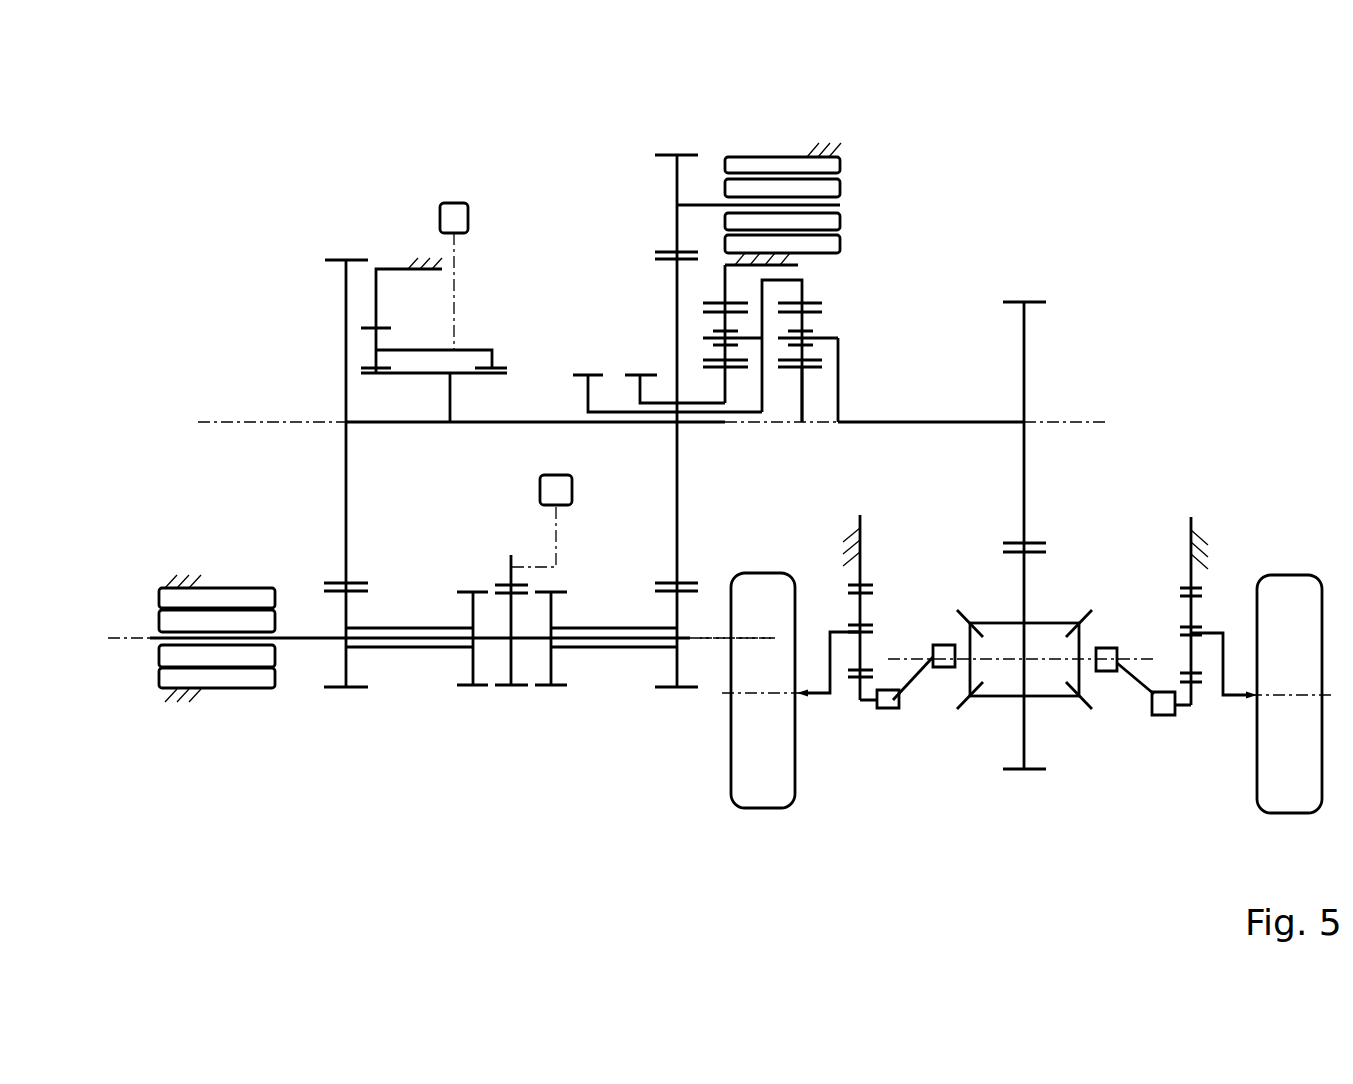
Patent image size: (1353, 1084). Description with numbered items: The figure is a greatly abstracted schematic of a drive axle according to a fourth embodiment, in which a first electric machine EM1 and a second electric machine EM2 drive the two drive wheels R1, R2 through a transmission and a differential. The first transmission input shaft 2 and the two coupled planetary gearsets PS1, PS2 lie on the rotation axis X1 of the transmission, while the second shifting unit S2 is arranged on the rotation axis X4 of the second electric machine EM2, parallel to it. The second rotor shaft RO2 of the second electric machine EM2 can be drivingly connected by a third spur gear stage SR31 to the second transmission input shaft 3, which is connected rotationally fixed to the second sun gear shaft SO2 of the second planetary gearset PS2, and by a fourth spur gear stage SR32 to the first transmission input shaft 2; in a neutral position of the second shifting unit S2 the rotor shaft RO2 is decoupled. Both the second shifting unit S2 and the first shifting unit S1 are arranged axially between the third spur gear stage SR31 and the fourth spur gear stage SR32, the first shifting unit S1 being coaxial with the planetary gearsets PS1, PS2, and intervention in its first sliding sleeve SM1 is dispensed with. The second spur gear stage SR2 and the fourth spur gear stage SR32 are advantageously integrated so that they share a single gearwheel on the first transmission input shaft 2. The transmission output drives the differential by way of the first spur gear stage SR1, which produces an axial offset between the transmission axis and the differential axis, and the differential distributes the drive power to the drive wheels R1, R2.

The first transmission input shaft 2 is at (693, 400).
The second transmission input shaft 3 is at (401, 423).
The rotation axis of the transmission X1 is at (233, 422).
The rotation axis of the second electric machine X4 is at (148, 640).
The first sliding sleeve SM1 is at (410, 347).
The first shifting unit S1 is at (480, 338).
The second shifting unit S2 is at (460, 733).
The second spur gear stage SR2 is at (640, 183).
The first electric machine EM1 is at (773, 143).
The second sun gear shaft SO2 is at (802, 393).
The first planetary gearset PS1 is at (725, 430).
The second planetary gearset PS2 is at (800, 430).
The first spur gear stage SR1 is at (1050, 530).
The second electric machine EM2 is at (221, 712).
The second rotor shaft RO2 is at (288, 641).
The third spur gear stage SR31 is at (333, 603).
The fourth spur gear stage SR32 is at (647, 712).
The drive wheel R1 is at (767, 787).
The drive wheel R2 is at (1273, 752).